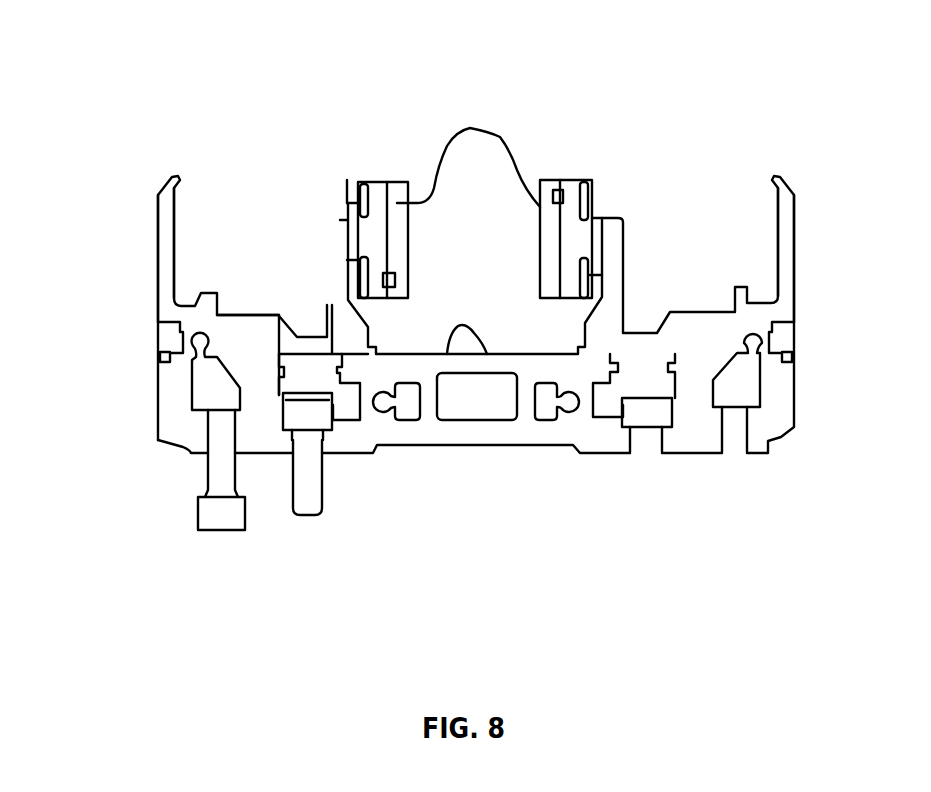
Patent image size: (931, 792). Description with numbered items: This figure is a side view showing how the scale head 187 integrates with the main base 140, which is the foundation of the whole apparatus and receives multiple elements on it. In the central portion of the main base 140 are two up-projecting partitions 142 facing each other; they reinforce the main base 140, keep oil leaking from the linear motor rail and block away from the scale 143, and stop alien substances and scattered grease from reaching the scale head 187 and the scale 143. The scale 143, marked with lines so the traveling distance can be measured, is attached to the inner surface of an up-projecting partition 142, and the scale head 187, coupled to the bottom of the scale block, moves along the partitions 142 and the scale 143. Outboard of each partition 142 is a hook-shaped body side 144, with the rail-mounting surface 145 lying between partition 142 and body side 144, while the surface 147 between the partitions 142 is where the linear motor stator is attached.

The main base 140 is at (172, 420).
The up-projecting partition 142 is at (340, 243).
The scale 143 is at (347, 180).
The body side 144 is at (156, 200).
The surface where the LM rail is attached 145 is at (258, 312).
The surface where the linear motor stator is attached 147 is at (447, 354).
The scale head 187 is at (468, 150).